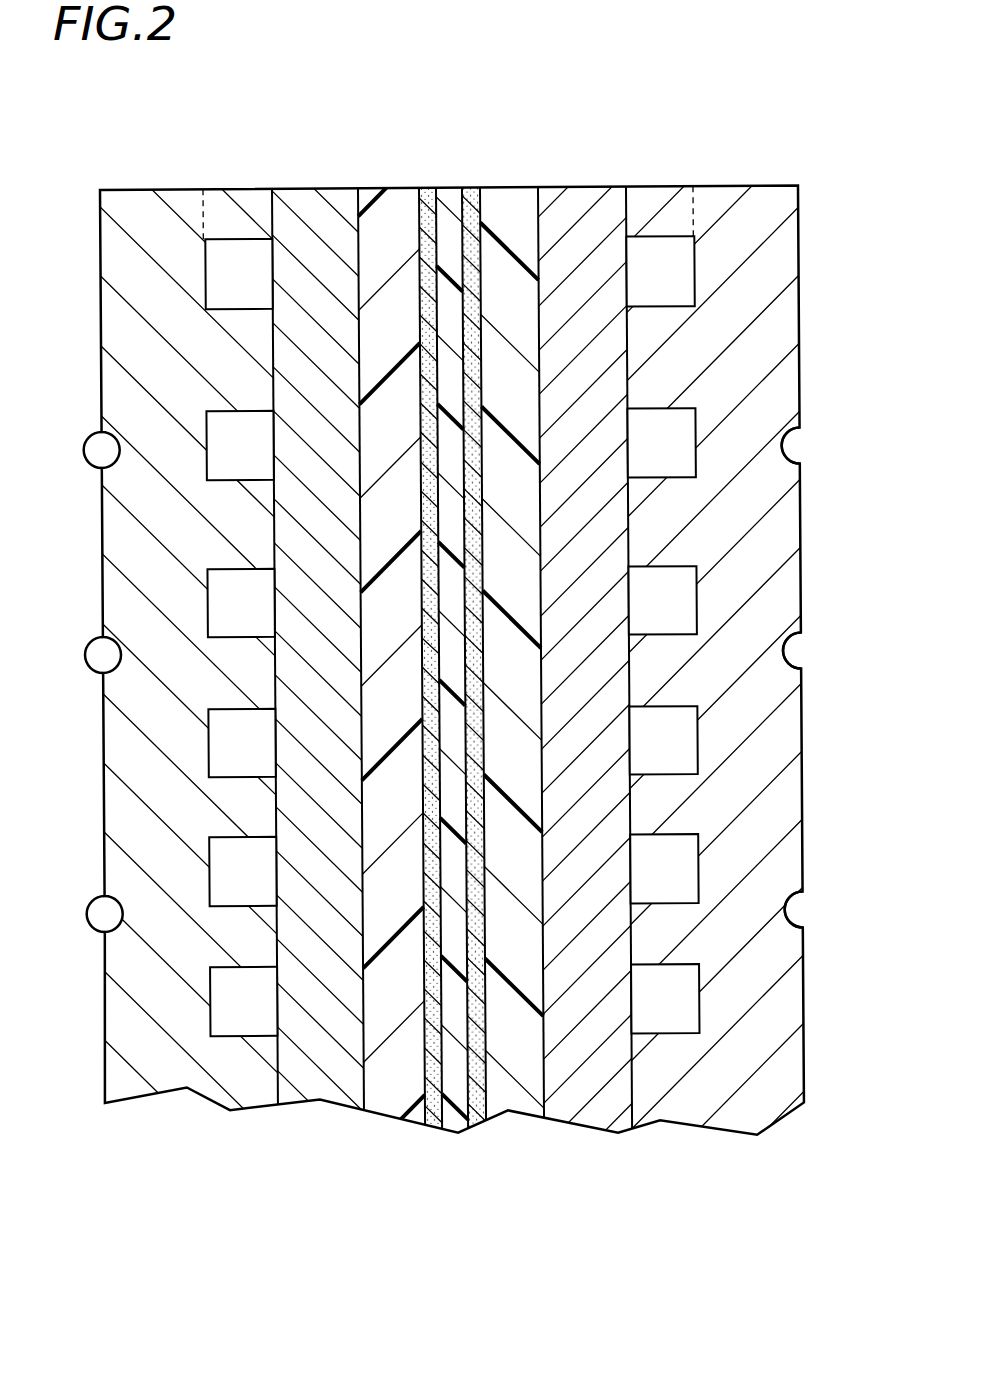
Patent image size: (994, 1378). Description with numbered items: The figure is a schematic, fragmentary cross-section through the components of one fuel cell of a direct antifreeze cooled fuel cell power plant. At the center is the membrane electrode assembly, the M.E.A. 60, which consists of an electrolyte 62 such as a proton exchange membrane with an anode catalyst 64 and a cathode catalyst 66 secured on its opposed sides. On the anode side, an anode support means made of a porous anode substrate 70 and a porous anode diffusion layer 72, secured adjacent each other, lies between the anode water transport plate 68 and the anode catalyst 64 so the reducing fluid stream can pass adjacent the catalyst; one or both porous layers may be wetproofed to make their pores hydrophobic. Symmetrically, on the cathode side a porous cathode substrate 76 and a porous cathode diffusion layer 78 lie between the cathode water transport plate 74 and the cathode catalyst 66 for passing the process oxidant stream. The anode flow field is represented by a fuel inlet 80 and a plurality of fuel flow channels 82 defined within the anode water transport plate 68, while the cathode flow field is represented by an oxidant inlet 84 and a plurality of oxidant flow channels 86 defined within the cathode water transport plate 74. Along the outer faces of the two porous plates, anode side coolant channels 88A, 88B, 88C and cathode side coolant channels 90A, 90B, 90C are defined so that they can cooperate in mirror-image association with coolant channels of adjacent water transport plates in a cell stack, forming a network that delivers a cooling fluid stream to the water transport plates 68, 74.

The M.E.A. 60 is at (463, 691).
The electrolyte 62 is at (450, 1132).
The anode catalyst 64 is at (437, 1137).
The cathode catalyst 66 is at (477, 1132).
The anode water transport plate 68 is at (208, 1083).
The porous anode substrate 70 is at (307, 1092).
The porous anode diffusion layer 72 is at (387, 1100).
The cathode water transport plate 74 is at (710, 1107).
The porous cathode substrate 76 is at (597, 1110).
The porous cathode diffusion layer 78 is at (517, 1107).
The fuel inlet 80 is at (232, 223).
The fuel flow channels 82 is at (233, 442).
The oxidant inlet 84 is at (670, 218).
The oxidant flow channels 86 is at (668, 435).
The anode side coolant channel 88A is at (106, 452).
The anode side coolant channel 88B is at (106, 655).
The anode side coolant channel 88C is at (106, 915).
The cathode side coolant channel 90A is at (797, 446).
The cathode side coolant channel 90B is at (799, 652).
The cathode side coolant channel 90C is at (801, 910).